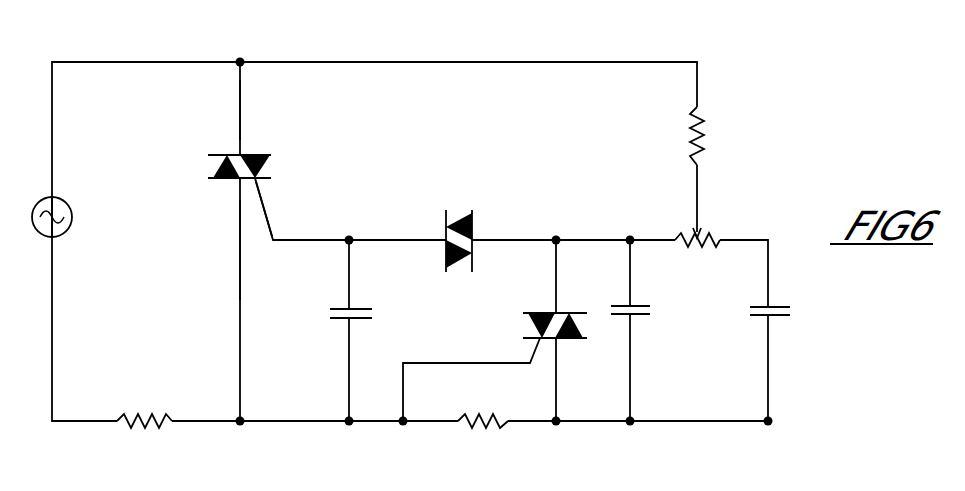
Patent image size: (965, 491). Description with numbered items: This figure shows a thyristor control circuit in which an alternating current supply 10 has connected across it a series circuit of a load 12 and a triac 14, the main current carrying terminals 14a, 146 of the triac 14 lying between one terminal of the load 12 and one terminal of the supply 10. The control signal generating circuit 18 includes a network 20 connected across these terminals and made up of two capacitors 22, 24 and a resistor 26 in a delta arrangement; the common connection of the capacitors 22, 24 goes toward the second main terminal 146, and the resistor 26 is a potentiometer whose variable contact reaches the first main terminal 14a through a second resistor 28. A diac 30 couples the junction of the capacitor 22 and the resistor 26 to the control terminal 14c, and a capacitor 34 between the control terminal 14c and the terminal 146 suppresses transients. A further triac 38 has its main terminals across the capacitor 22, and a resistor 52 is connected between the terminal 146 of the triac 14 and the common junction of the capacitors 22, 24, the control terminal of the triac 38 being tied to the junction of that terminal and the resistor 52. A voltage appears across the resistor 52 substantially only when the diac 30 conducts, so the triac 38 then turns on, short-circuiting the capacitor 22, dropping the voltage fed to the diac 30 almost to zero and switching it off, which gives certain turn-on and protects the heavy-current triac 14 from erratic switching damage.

The alternating current supply 10 is at (60, 235).
The load 12 is at (147, 413).
The triac 14 is at (223, 152).
The first main current carrying terminal 14a is at (241, 107).
The control terminal 14c is at (267, 213).
The second main current carrying terminal 146 is at (240, 267).
The control signal generating circuit 18 is at (512, 58).
The network 20 is at (613, 163).
The capacitor 22 is at (640, 317).
The capacitor 24 is at (778, 315).
The resistor 26 is at (710, 233).
The second resistor 28 is at (700, 128).
The diac 30 is at (475, 230).
The capacitor 34 is at (360, 308).
The further triac 38 is at (542, 312).
The resistor 52 is at (500, 425).